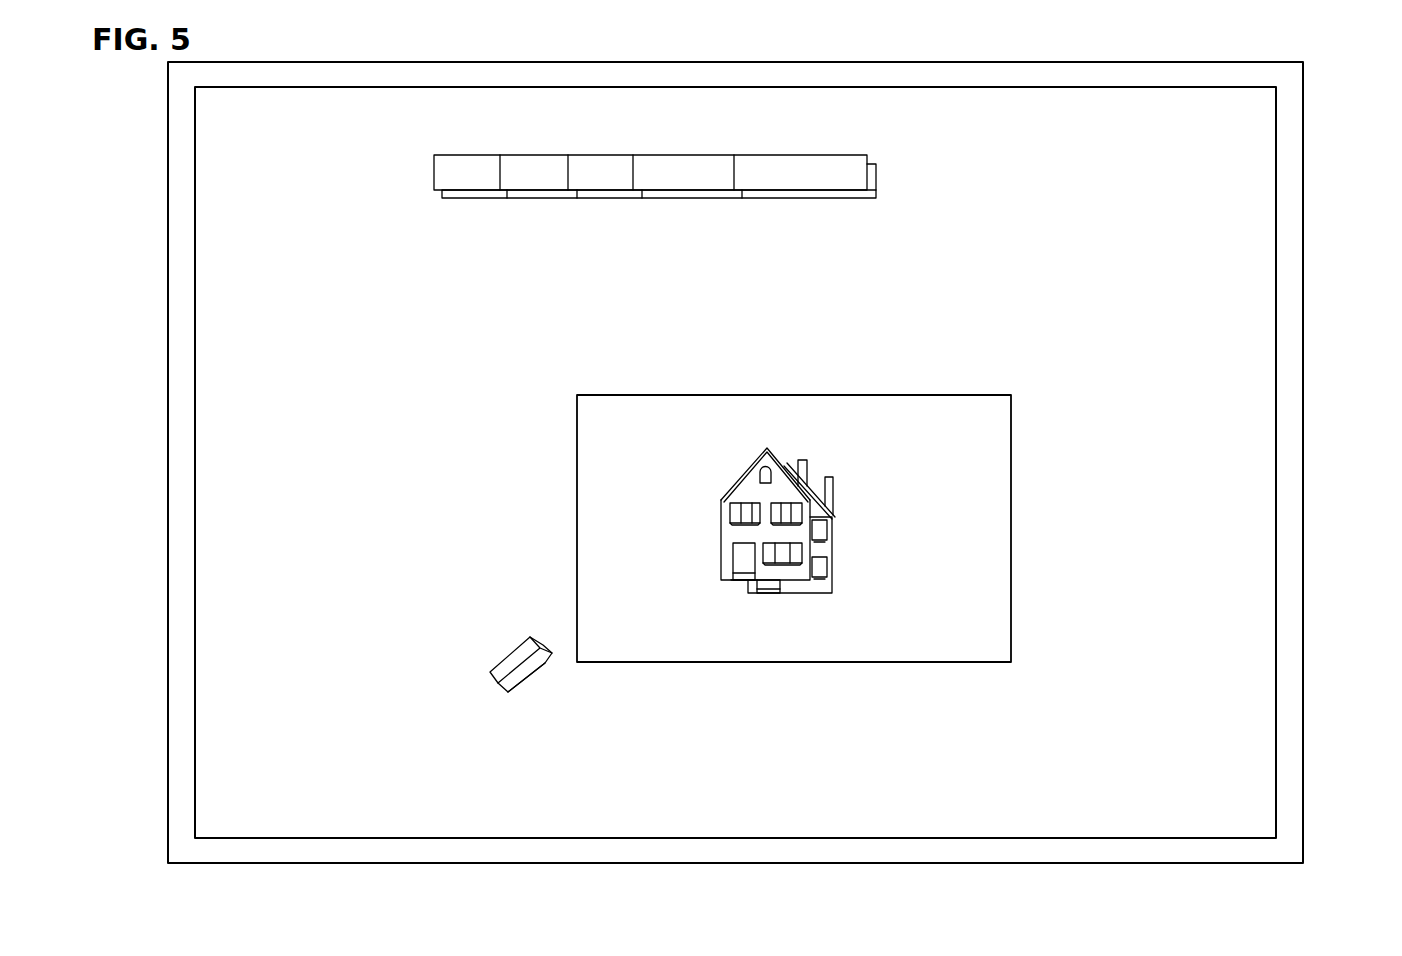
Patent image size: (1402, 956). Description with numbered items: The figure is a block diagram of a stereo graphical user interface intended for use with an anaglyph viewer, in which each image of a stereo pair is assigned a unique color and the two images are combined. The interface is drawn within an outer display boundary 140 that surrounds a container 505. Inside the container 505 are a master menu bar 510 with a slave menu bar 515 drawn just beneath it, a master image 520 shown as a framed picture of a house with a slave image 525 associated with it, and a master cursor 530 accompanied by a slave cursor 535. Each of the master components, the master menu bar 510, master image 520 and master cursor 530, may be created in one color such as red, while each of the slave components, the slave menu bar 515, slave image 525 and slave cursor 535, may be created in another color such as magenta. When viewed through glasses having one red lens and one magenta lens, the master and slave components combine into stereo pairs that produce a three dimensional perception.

The display screen 140 is at (571, 58).
The container 505 is at (1290, 140).
The master menu bar 510 is at (421, 185).
The slave menu bar 515 is at (558, 212).
The master image 520 is at (704, 530).
The slave image 525 is at (847, 586).
The master cursor 530 is at (498, 653).
The slave cursor 535 is at (530, 689).